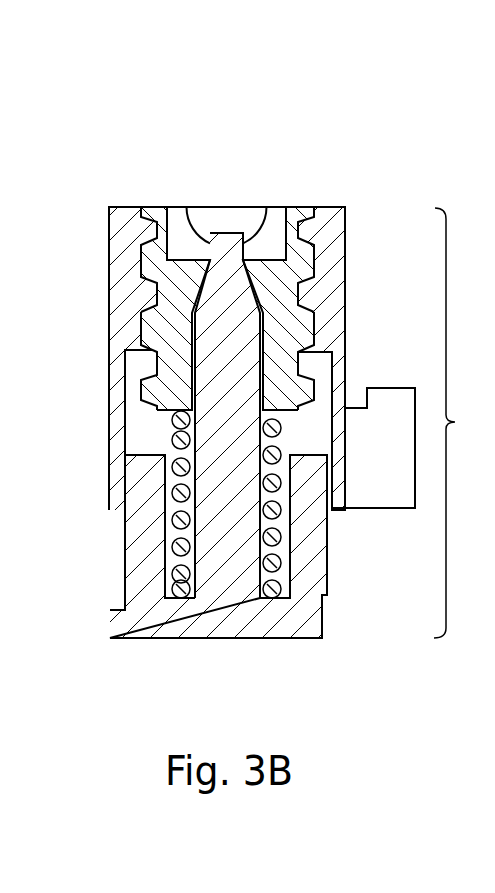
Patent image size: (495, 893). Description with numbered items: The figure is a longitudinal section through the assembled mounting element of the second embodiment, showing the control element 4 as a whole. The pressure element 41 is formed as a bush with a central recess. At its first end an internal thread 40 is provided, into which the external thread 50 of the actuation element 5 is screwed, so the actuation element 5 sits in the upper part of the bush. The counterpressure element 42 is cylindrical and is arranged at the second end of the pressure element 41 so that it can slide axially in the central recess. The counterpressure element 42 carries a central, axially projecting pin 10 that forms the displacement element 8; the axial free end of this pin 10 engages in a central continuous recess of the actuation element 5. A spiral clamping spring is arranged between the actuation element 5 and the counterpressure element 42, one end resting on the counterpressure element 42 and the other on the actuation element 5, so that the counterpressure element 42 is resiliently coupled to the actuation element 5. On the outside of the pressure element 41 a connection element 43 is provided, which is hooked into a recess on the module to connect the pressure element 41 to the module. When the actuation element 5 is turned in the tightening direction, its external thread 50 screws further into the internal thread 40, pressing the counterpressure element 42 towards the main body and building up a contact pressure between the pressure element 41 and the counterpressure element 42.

The control element 4 is at (456, 423).
The actuation element 5 is at (177, 307).
The displacement element 8 is at (230, 430).
The pin 10 is at (215, 315).
The internal thread 40 is at (145, 245).
The pressure element 41 is at (325, 233).
The counterpressure element 42 is at (210, 610).
The connection element 43 is at (375, 480).
The external thread 50 is at (155, 385).